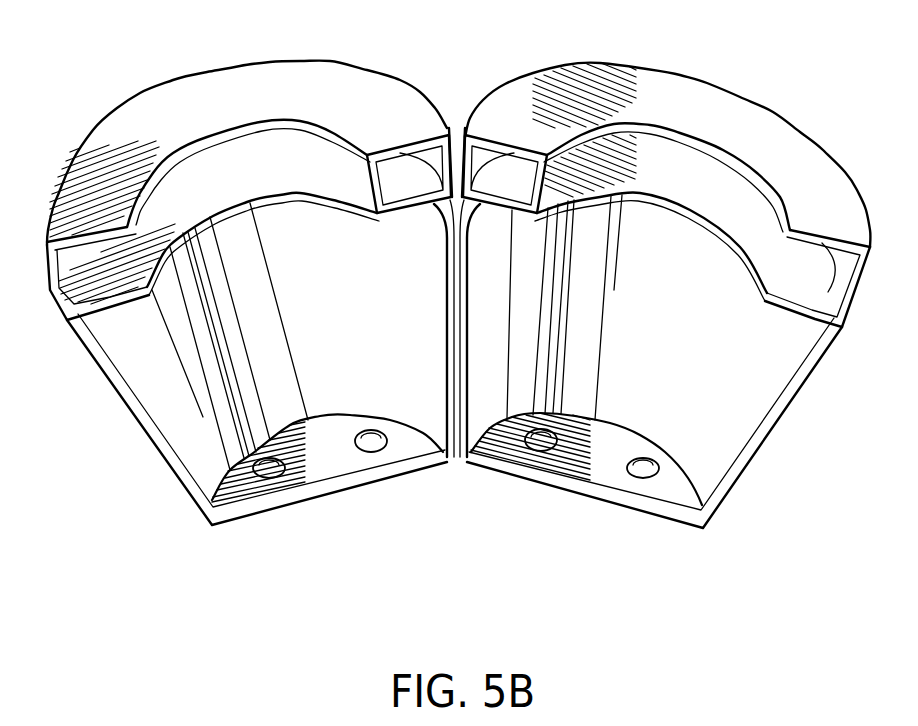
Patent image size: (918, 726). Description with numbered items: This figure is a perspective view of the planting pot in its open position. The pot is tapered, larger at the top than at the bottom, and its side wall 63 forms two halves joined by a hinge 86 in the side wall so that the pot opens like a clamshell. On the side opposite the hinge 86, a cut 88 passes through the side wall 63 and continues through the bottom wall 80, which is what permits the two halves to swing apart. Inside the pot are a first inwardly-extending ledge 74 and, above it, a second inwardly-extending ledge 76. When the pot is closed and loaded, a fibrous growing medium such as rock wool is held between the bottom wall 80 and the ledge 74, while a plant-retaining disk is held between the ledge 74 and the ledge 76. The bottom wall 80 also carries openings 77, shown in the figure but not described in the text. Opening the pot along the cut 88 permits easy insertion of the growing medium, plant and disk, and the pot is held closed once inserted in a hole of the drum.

The side wall 63 is at (177, 422).
The first inwardly-extending ledge 74 is at (132, 312).
The second inwardly-extending ledge 76 is at (63, 226).
The mounting hole 77 is at (377, 447).
The bottom wall 80 is at (598, 473).
The hinge 86 is at (456, 320).
The cut 88 is at (345, 492).